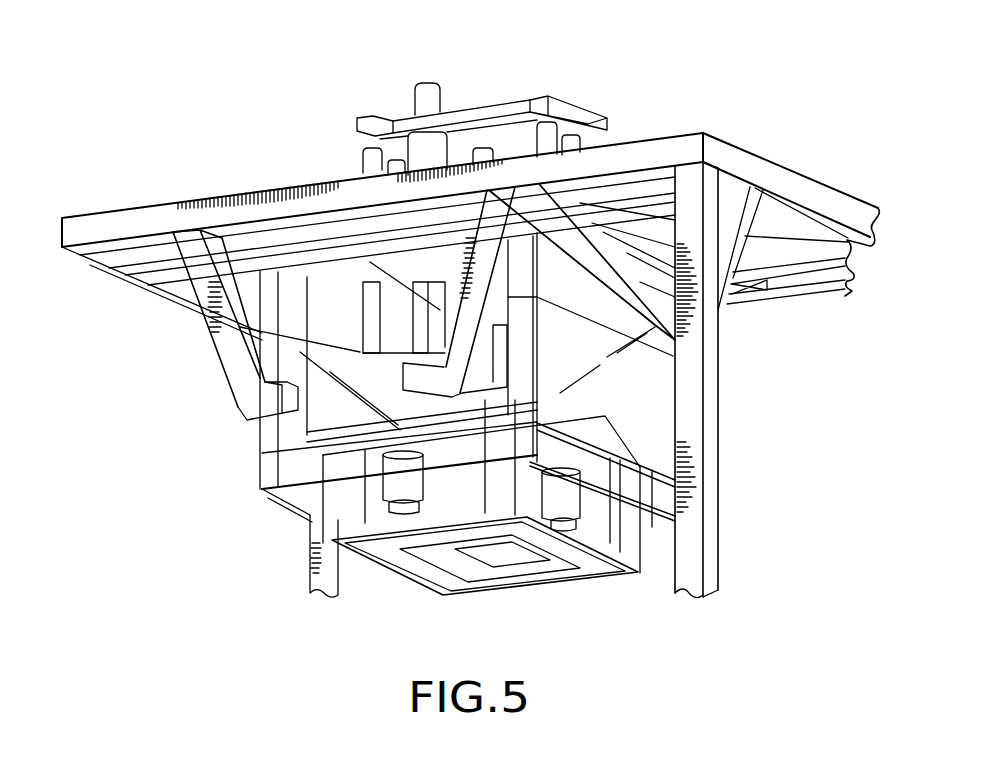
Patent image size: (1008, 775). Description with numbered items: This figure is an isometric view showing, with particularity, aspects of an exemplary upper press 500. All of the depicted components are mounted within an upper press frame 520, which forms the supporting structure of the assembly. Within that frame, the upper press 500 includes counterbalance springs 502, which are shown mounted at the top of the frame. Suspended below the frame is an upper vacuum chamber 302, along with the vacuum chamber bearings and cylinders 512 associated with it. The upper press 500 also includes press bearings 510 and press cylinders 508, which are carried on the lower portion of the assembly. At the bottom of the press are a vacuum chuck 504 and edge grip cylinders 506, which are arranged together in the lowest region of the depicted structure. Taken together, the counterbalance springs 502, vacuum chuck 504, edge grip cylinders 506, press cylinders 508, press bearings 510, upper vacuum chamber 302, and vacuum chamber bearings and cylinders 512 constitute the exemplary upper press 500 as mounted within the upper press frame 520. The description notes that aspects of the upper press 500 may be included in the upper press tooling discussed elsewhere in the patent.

The upper press 500 is at (90, 54).
The counterbalance springs 502 is at (422, 148).
The upper press frame 520 is at (163, 222).
The vacuum chamber bearings and cylinders 512 is at (425, 290).
The upper vacuum chamber 302 is at (338, 497).
The press bearings 510 is at (400, 483).
The press cylinders 508 is at (472, 488).
The edge grip cylinders 506 is at (455, 548).
The vacuum chuck 504 is at (492, 556).